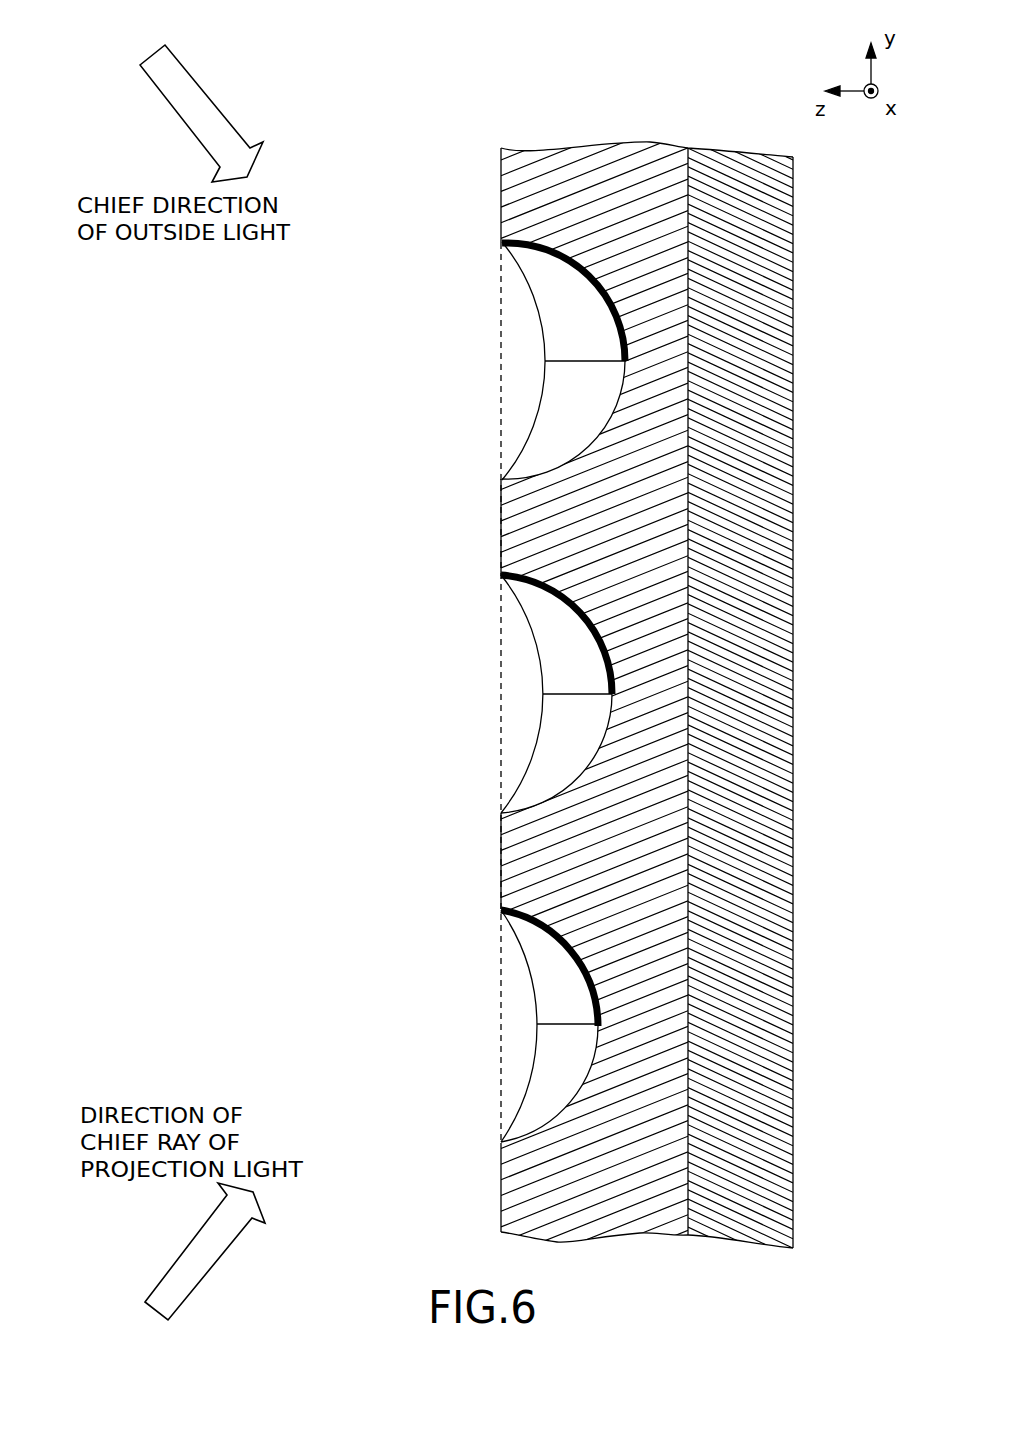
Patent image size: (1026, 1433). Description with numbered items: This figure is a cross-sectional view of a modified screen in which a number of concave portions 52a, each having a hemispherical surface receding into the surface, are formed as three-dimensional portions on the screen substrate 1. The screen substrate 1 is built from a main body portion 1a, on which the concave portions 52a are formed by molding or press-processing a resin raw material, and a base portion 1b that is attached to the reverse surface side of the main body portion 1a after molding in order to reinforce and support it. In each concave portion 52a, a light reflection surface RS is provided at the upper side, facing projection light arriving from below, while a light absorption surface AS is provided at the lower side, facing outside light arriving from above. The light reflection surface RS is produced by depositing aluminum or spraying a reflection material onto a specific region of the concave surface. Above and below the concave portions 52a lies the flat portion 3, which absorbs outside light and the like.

The screen substrate 1 is at (667, 106).
The main body portion 1a is at (592, 147).
The base portion 1b is at (734, 150).
The flat portion 3 is at (502, 193).
The concave portion 52a is at (545, 357).
The light reflection surface RS is at (558, 267).
The light absorption surface AS is at (560, 460).